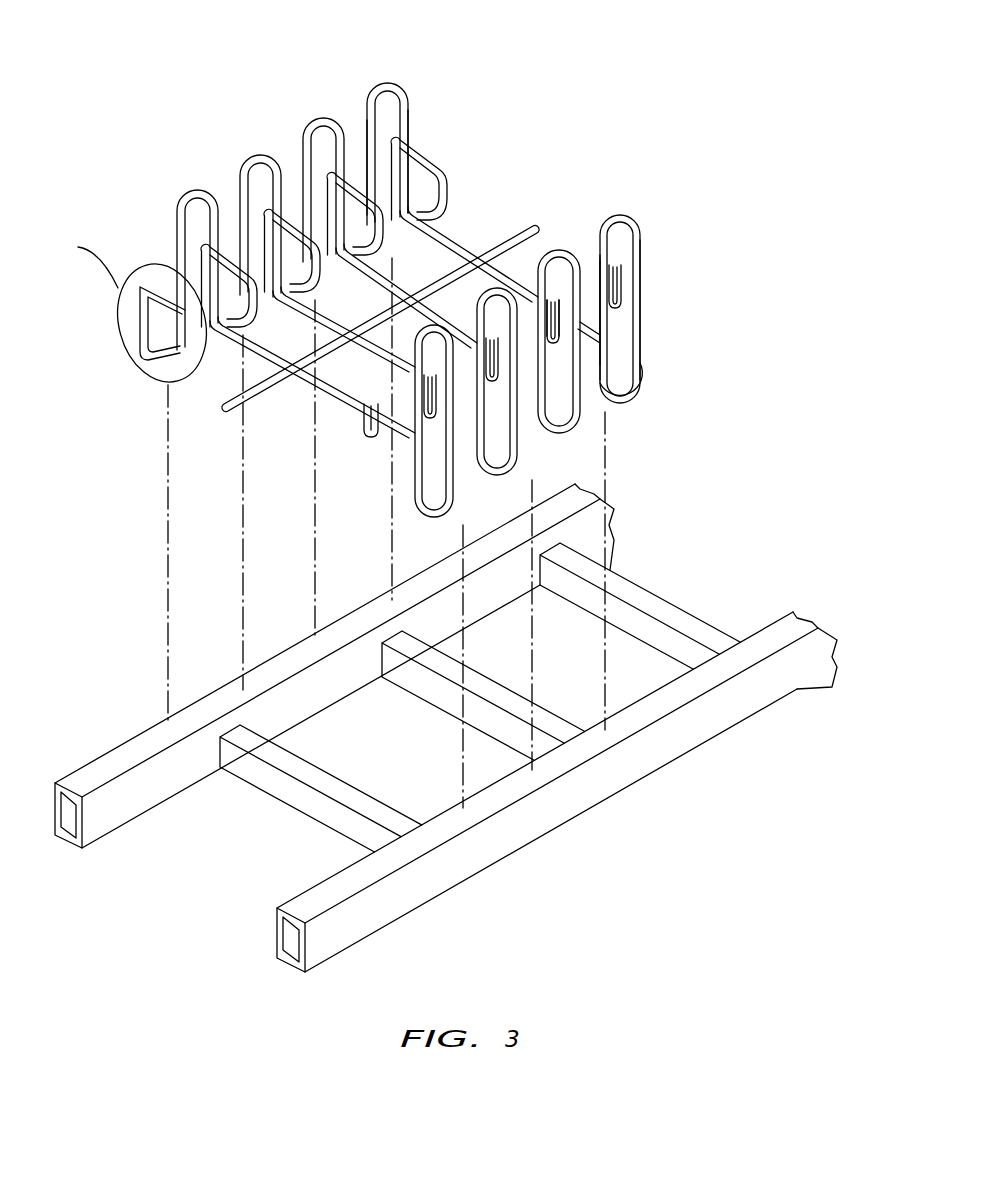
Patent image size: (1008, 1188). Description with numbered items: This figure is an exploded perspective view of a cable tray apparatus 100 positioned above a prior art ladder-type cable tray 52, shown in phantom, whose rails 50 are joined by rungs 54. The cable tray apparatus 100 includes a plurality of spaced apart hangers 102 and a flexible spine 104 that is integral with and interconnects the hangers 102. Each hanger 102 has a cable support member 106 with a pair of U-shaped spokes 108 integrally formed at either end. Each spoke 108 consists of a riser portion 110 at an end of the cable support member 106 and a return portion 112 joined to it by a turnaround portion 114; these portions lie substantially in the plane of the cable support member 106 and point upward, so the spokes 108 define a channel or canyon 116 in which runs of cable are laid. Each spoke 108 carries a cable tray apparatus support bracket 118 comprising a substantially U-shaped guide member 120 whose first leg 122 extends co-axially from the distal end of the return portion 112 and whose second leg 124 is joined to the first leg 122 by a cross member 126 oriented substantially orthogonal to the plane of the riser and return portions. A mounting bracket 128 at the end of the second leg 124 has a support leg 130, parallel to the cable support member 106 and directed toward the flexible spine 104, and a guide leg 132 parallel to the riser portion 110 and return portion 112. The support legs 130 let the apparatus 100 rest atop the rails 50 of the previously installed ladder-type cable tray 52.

The rail 50 is at (782, 672).
The ladder-type cable tray 52 is at (738, 529).
The cross bar of rack 54 is at (660, 605).
The cable tray apparatus 100 is at (804, 209).
The hanger 102 is at (358, 72).
The flexible spine 104 is at (533, 233).
The cable support member 106 is at (437, 227).
The U-shaped spoke 108 is at (410, 153).
The riser portion 110 is at (408, 123).
The return portion 112 is at (367, 113).
The turnaround portion 114 is at (385, 82).
The channel or canyon 116 is at (563, 197).
The cable tray apparatus support bracket 118 is at (648, 341).
The U-shaped guide member 120 is at (635, 400).
The first leg 122 is at (645, 328).
The second leg 124 is at (593, 402).
The cross member 126 is at (638, 385).
The mounting bracket 128 is at (551, 302).
The support leg 130 is at (413, 463).
The guide leg 132 is at (372, 442).